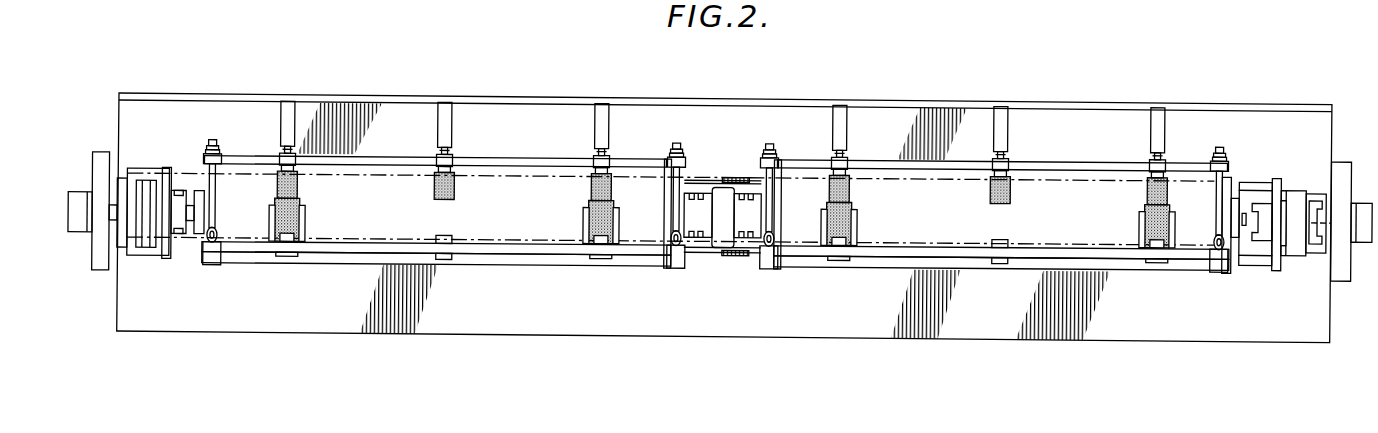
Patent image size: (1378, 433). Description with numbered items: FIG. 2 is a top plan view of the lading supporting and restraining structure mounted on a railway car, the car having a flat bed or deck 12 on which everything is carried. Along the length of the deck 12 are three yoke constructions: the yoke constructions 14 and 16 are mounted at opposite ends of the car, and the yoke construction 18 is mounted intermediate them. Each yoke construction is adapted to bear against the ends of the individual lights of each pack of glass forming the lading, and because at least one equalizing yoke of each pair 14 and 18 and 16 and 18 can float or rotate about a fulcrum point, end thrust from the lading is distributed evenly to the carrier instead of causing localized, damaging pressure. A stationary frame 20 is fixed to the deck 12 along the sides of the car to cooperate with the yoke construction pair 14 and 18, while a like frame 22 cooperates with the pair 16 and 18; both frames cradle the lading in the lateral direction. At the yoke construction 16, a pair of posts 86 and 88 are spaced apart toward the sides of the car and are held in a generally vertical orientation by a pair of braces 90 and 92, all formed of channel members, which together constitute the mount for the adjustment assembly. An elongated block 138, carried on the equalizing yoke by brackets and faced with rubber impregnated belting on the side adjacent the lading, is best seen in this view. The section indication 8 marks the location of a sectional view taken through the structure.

The deck 12 is at (142, 299).
The yoke construction 14 is at (143, 150).
The yoke construction 16 is at (1265, 156).
The yoke construction 18 is at (731, 162).
The frame 20 is at (470, 116).
The frame 22 is at (1046, 130).
The post 86 is at (1324, 168).
The post 88 is at (1324, 258).
The brace 90 is at (1294, 184).
The brace 92 is at (1294, 262).
The block 138 is at (1213, 270).
The section line 8 is at (1195, 237).